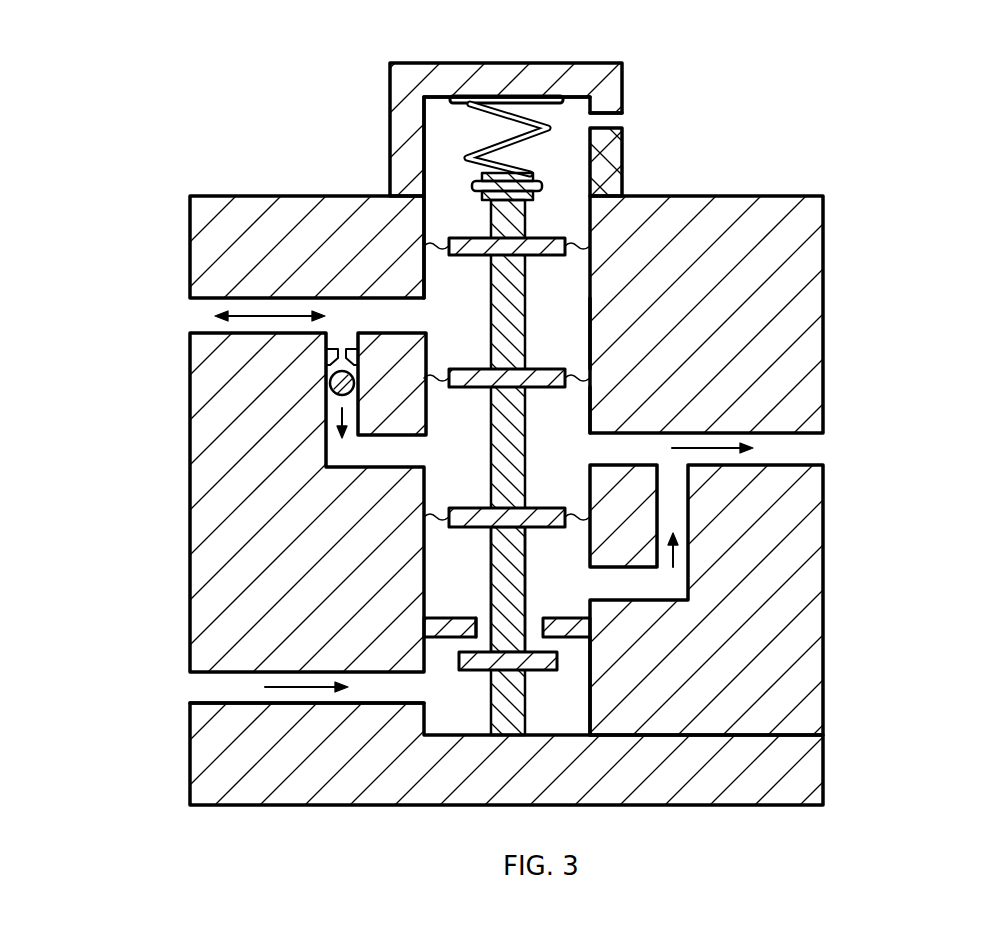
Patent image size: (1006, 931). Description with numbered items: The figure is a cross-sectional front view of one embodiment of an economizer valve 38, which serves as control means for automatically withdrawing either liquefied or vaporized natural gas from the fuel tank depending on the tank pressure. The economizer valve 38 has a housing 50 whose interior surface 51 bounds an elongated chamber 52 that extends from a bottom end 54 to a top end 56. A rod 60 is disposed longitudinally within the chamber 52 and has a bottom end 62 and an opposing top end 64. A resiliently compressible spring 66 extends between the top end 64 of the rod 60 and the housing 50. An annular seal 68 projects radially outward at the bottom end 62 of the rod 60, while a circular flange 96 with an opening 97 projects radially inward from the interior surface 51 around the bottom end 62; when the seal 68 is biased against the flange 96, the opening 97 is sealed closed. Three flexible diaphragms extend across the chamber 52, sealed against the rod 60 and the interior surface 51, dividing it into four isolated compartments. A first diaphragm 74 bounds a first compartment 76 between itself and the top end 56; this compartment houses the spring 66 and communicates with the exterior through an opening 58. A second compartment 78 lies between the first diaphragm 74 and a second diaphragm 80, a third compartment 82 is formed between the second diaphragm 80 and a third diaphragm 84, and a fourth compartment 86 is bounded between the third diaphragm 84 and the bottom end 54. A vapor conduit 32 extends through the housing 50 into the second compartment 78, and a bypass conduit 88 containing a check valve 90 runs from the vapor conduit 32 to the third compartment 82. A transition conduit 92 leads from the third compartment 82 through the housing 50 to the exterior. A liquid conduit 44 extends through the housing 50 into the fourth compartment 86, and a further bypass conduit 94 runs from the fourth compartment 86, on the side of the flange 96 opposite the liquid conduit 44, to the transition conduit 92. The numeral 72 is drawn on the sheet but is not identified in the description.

The vapor conduit 32 is at (233, 307).
The economizer valve 38 is at (953, 142).
The liquid conduit 44 is at (245, 678).
The housing 50 is at (733, 314).
The interior surface 51 is at (372, 197).
The chamber 52 is at (480, 129).
The bottom end 54 is at (506, 779).
The top end 56 is at (498, 56).
The opening 58 is at (642, 109).
The rod 60 is at (533, 467).
The bottom end 62 is at (534, 589).
The top end 64 is at (491, 197).
The spring 66 is at (520, 93).
The annular seal 68 is at (505, 681).
The inlet passage 72 is at (307, 781).
The first diaphragm 74 is at (507, 225).
The first compartment 76 is at (636, 162).
The second compartment 78 is at (605, 333).
The second diaphragm 80 is at (507, 359).
The third compartment 82 is at (605, 410).
The third diaphragm 84 is at (507, 498).
The fourth compartment 86 is at (599, 685).
The bypass conduit 88 is at (321, 441).
The check valve 90 is at (314, 378).
The transition conduit 92 is at (787, 438).
The bypass conduit 94 is at (775, 557).
The circular flange 96 is at (507, 609).
The opening 97 is at (461, 594).